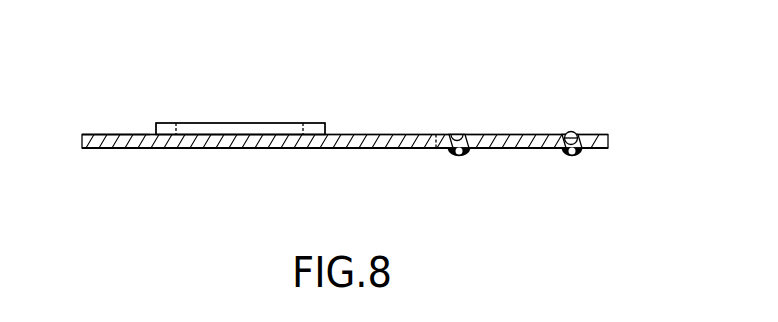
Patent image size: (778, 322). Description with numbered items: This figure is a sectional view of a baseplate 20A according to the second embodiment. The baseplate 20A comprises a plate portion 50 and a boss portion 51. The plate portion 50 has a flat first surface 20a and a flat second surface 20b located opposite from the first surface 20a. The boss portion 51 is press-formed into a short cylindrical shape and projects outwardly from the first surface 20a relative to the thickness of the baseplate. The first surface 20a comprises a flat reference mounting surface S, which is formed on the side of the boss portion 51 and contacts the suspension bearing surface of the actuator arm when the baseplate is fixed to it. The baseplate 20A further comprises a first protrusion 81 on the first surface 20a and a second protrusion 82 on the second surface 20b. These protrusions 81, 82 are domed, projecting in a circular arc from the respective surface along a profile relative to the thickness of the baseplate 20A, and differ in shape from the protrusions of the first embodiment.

The reference mounting surface S is at (123, 133).
The baseplate 20A is at (128, 153).
The first surface 20a is at (424, 134).
The second surface 20b is at (385, 150).
The plate portion 50 is at (262, 150).
The boss portion 51 is at (232, 123).
The first protrusion 81 is at (572, 130).
The second protrusion 82 is at (458, 161).